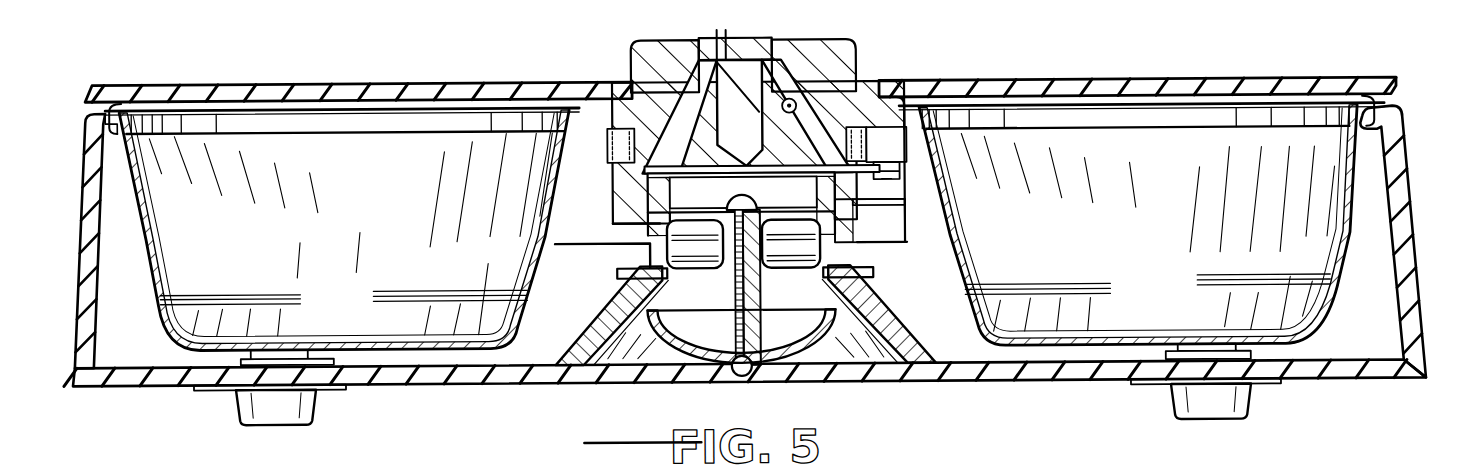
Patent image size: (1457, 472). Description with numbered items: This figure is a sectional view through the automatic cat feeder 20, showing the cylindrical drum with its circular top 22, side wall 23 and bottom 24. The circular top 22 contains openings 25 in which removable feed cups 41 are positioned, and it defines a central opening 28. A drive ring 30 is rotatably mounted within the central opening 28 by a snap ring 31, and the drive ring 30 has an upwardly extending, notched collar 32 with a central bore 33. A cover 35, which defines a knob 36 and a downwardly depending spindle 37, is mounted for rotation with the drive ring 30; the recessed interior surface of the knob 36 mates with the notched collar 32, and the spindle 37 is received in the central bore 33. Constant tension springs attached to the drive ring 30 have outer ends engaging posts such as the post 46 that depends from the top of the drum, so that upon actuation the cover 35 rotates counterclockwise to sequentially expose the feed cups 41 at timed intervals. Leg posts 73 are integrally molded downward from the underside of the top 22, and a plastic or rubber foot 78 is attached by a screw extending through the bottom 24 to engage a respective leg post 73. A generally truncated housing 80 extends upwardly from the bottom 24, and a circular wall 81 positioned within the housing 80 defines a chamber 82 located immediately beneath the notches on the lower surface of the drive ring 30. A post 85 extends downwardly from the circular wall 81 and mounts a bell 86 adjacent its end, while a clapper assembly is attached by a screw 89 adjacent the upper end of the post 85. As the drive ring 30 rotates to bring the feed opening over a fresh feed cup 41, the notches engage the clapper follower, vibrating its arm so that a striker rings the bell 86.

The cat feeder 20 is at (438, 386).
The circular top 22 is at (903, 98).
The side wall 23 is at (1410, 187).
The bottom 24 is at (1050, 381).
The openings 25 is at (132, 100).
The central opening 28 is at (705, 40).
The drive ring 30 is at (905, 203).
The snap ring 31 is at (633, 80).
The notched collar 32 is at (773, 55).
The central bore 33 is at (718, 58).
The cover 35 is at (341, 81).
The knob 36 is at (726, 30).
The spindle 37 is at (753, 139).
The feed cups 41 is at (160, 230).
The post 46 is at (915, 151).
The leg posts 73 is at (320, 356).
The foot 78 is at (233, 409).
The housing 80 is at (857, 282).
The circular wall 81 is at (773, 252).
The chamber 82 is at (717, 207).
The post 85 is at (717, 255).
The bell 86 is at (823, 340).
The screw 89 is at (757, 207).